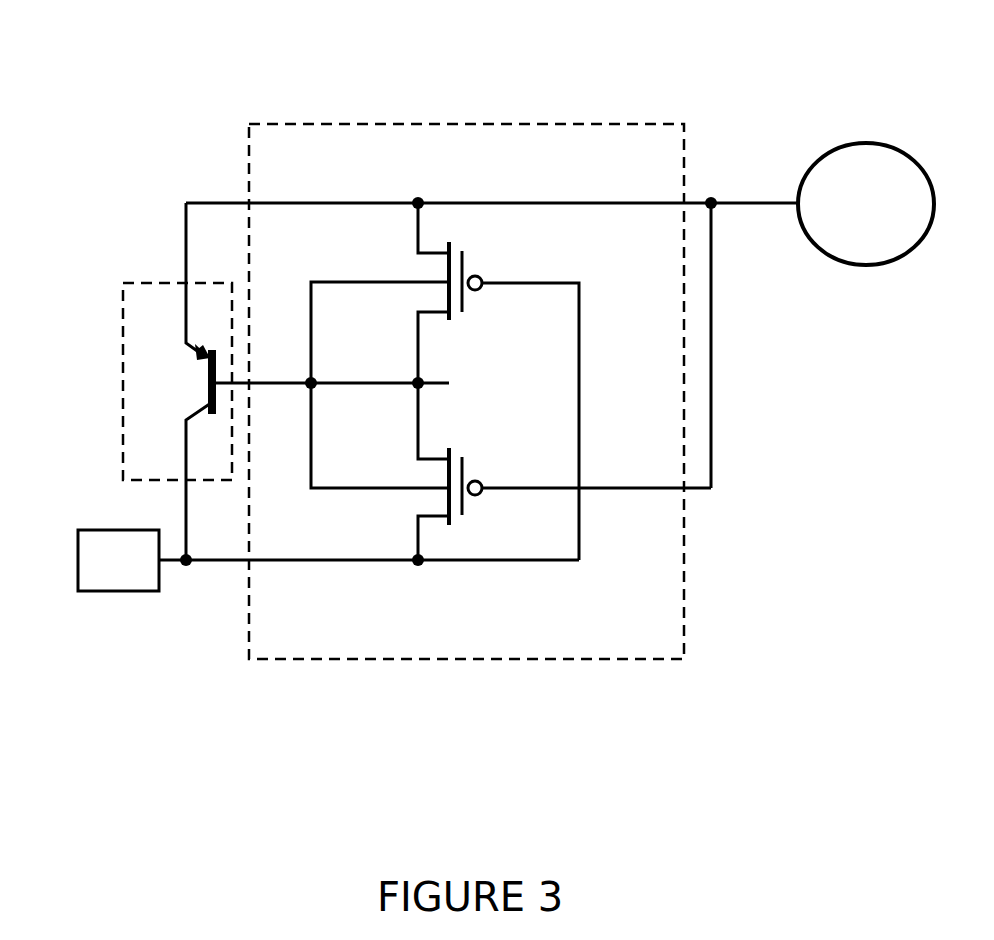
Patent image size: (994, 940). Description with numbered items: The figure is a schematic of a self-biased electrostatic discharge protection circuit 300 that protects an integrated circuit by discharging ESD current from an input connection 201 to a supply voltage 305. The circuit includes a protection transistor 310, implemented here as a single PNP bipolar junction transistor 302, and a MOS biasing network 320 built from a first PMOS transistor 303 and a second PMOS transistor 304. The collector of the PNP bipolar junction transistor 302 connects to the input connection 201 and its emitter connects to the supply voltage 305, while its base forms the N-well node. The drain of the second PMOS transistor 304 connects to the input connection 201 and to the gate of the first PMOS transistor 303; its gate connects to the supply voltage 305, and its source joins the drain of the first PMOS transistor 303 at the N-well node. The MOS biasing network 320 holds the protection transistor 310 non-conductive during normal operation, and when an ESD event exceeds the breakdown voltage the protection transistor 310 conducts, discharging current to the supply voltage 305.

The self-biased electrostatic discharge protection circuit 300 is at (63, 37).
The input connection 201 is at (141, 572).
The PNP bipolar junction transistor 302 is at (208, 400).
The first PMOS transistor 303 is at (475, 272).
The second PMOS transistor 304 is at (464, 510).
The supply voltage 305 is at (885, 232).
The protection transistor 310 is at (123, 283).
The MOS biasing network 320 is at (249, 600).